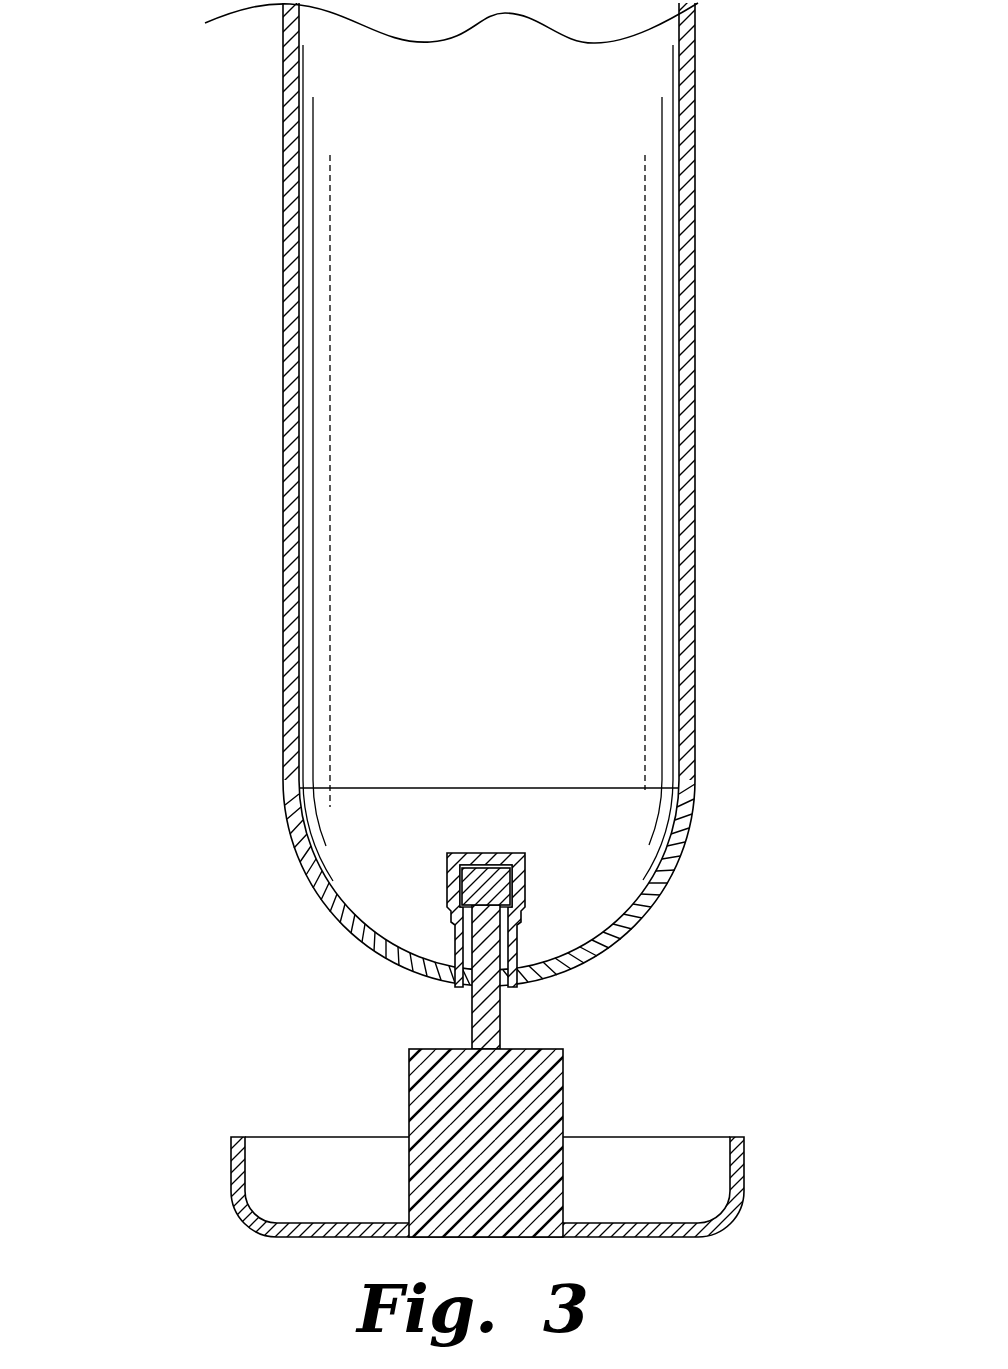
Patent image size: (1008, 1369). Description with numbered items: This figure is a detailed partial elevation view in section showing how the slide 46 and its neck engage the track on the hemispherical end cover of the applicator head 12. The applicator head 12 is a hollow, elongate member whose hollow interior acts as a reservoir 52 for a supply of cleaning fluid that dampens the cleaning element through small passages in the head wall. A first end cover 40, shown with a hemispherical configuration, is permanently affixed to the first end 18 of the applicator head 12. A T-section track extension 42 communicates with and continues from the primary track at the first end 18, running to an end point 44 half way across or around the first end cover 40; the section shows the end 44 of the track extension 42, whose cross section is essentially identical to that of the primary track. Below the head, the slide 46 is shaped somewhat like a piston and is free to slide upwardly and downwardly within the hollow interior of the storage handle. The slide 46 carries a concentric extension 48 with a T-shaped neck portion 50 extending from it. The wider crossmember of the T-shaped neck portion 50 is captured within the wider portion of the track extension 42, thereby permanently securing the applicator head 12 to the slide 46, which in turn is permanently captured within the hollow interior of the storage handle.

The applicator head 12 is at (283, 422).
The first end of the applicator head 18 is at (695, 774).
The reservoir 52 is at (488, 296).
The T-section track extension 42 is at (447, 853).
The end point of the track extension 44 is at (447, 885).
The T-shaped neck portion 50 is at (505, 882).
The first end cover 40 is at (352, 935).
The concentric extension 48 is at (563, 1107).
The slide 46 is at (231, 1152).